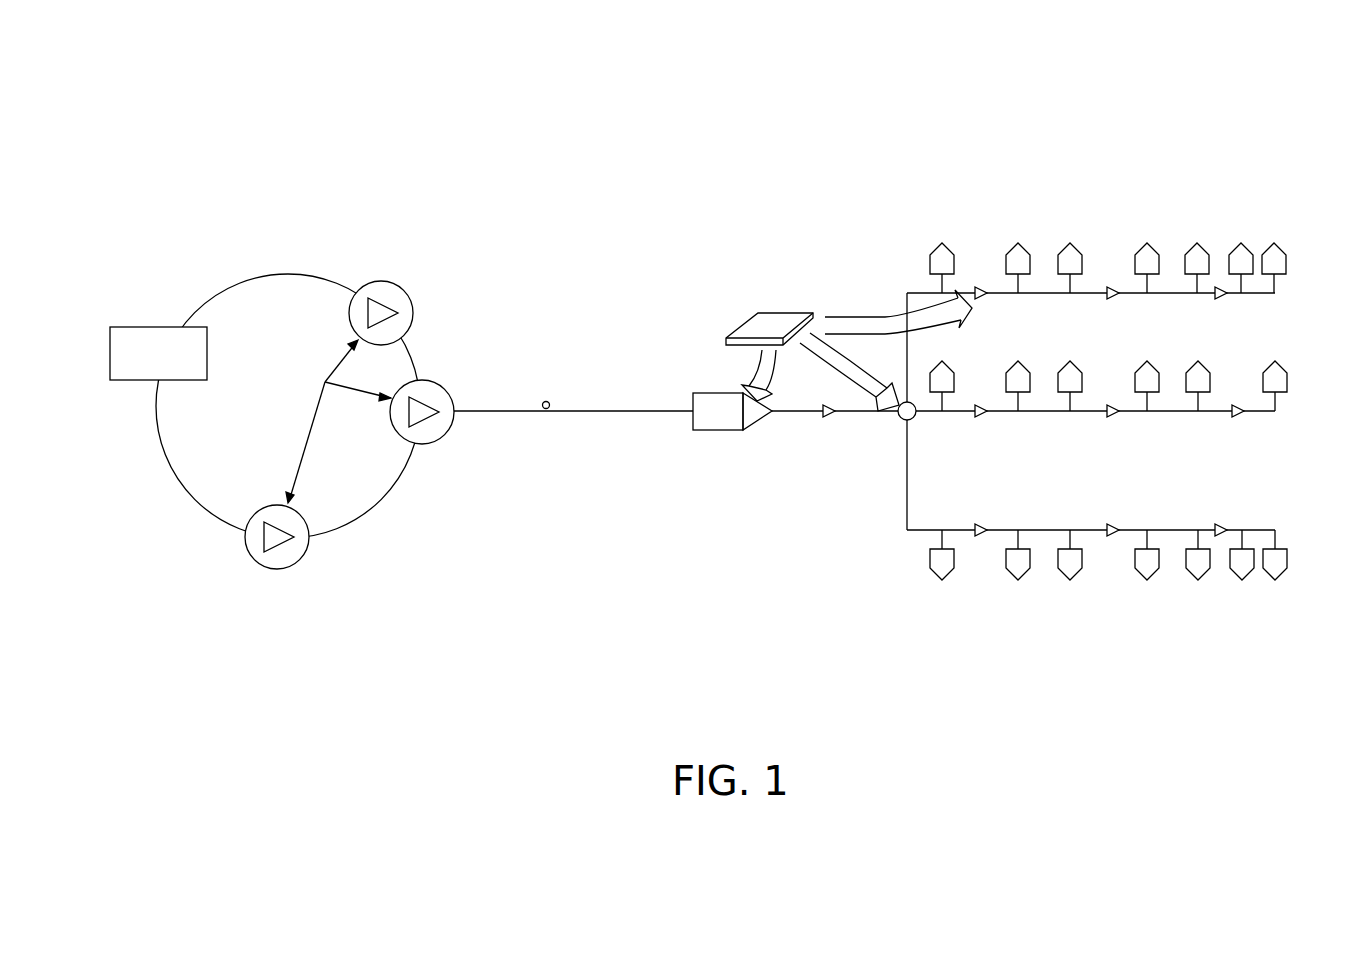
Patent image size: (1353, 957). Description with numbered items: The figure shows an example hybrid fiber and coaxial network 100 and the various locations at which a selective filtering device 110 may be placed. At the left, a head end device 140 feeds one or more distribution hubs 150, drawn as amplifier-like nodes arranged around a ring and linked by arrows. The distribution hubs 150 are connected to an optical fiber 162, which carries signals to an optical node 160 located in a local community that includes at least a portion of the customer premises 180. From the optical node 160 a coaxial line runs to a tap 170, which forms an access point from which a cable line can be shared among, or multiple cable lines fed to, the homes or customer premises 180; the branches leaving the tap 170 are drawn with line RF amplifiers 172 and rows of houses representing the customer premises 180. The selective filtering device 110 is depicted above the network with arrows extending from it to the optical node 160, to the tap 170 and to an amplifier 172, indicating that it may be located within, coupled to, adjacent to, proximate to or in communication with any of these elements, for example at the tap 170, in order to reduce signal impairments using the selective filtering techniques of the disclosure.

The hybrid fiber and coaxial (HFC) network 100 is at (204, 54).
The selective filtering device 110 is at (768, 312).
The head end device 140 is at (158, 353).
The distribution hubs 150 is at (305, 421).
The optical node 160 is at (717, 392).
The optical fiber 162 is at (548, 412).
The tap 170 is at (895, 422).
The amplifiers 172 is at (977, 289).
The homes or customer premises 180 is at (1195, 247).